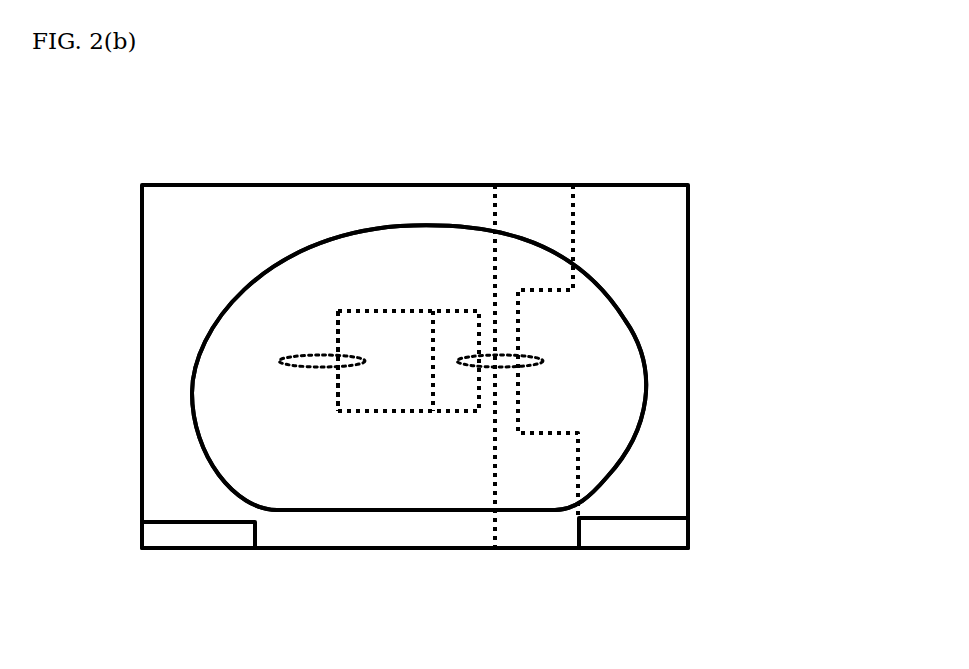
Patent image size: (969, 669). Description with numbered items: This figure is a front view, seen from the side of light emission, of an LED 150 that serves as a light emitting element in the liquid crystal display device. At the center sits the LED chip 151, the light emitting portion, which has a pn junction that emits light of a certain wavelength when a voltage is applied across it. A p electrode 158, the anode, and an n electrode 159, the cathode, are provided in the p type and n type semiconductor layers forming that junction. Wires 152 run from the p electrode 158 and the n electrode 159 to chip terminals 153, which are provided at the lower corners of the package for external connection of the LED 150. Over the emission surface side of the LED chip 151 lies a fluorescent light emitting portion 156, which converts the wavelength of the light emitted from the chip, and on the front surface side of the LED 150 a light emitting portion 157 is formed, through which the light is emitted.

The LED 150 is at (421, 555).
The LED chip 151 is at (406, 320).
The wires 152 is at (313, 367).
The chip terminals 153 is at (236, 535).
The fluorescent light emitting portion 156 is at (296, 293).
The light emitting portion 157 is at (648, 372).
The p electrode 158 is at (465, 325).
The n electrode 159 is at (348, 330).